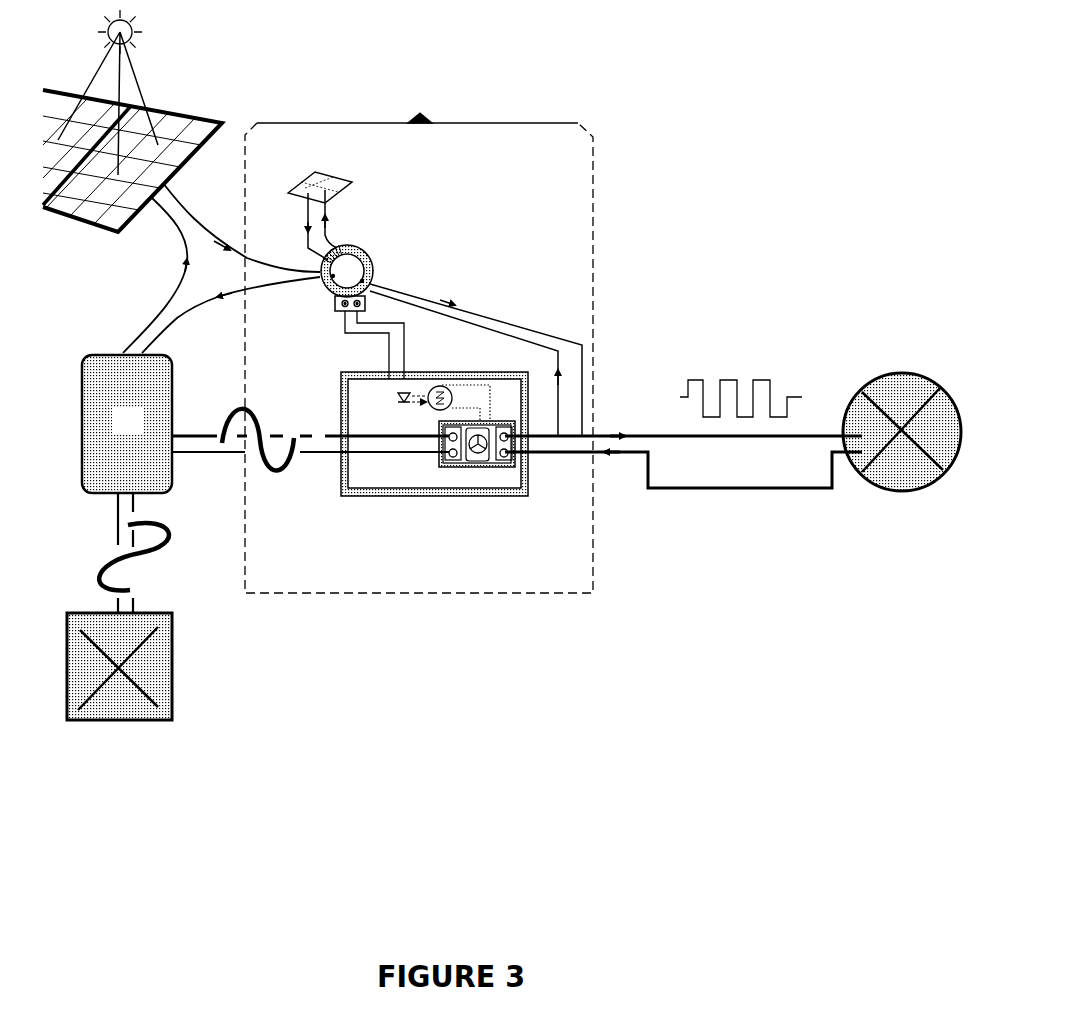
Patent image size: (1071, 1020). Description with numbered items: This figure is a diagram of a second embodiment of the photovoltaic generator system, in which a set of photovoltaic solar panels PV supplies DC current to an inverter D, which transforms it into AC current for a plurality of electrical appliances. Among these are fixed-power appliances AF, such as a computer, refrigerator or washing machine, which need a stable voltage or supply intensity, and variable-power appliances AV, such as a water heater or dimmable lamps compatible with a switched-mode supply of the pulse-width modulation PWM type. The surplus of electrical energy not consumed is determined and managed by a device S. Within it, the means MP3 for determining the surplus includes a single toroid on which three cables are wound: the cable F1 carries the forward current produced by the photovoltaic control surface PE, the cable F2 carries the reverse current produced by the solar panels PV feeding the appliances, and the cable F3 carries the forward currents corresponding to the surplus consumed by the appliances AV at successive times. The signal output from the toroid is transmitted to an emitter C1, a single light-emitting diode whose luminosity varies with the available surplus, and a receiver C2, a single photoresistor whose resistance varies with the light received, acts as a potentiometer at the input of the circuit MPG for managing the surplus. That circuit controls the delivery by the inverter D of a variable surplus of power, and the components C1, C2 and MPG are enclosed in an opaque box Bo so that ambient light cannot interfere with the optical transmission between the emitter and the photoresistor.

The photovoltaic solar panels PV is at (185, 97).
The device for determining and managing the surplus S is at (419, 333).
The photovoltaic control surface PE is at (343, 171).
The cable F1 is at (298, 236).
The cable F2 is at (308, 288).
The cable F3 is at (472, 303).
The means for determining the surplus of available power MP3 is at (371, 252).
The emitter C1 is at (378, 412).
The receiver C2 is at (437, 383).
The opaque box Bo is at (415, 503).
The circuit for managing the surplus MPG is at (470, 478).
The inverter D is at (265, 424).
The fixed-power electrical appliances AF is at (133, 733).
The variable-power electrical appliances AV is at (912, 503).
The pulse-width modulation PWM is at (741, 378).